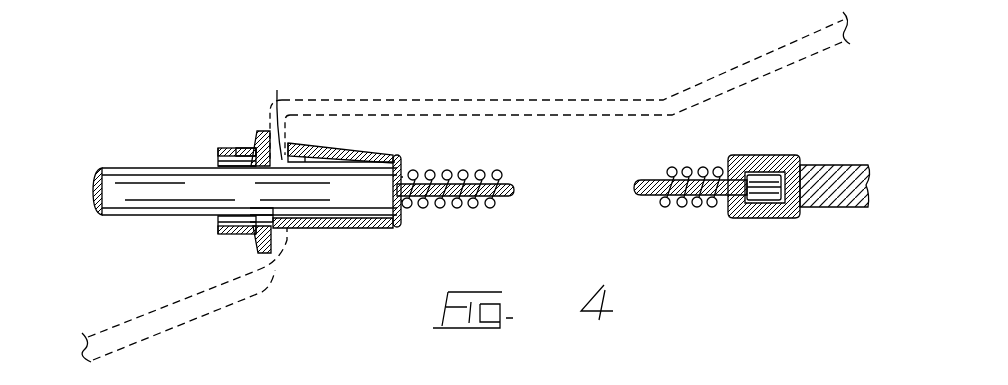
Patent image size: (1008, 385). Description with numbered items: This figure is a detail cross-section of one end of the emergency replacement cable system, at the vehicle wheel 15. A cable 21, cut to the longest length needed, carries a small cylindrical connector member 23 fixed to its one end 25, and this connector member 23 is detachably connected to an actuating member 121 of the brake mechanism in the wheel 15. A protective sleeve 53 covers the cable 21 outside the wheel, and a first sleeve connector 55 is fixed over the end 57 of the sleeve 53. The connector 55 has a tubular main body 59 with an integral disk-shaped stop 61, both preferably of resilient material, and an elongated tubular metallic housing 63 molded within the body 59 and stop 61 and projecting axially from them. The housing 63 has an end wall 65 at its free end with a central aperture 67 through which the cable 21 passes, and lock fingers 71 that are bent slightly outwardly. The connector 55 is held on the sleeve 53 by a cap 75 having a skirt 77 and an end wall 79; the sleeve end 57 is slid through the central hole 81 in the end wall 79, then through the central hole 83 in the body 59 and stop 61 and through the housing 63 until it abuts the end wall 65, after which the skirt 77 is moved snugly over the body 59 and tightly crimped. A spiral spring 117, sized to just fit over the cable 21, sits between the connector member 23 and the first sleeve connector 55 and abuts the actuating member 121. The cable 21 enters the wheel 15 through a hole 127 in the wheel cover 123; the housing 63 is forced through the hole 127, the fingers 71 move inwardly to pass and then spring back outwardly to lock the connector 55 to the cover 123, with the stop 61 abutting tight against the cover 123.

The vehicle wheel 15 is at (138, 320).
The cable 21 is at (653, 199).
The cylindrical connector member 23 is at (768, 206).
The one end of the cable 25 is at (792, 190).
The protective sleeve 53 is at (164, 219).
The first sleeve connector 55 is at (382, 178).
The end of sleeve 57 is at (395, 229).
The tubular main body 59 is at (238, 148).
The disk-shaped stop 61 is at (266, 256).
The tubular metallic housing 63 is at (323, 232).
The end wall 65 is at (398, 222).
The central aperture 67 is at (399, 163).
The lock finger 71 is at (308, 147).
The cap 75 is at (206, 157).
The skirt 77 is at (238, 234).
The end wall 79 is at (219, 220).
The central hole 81 is at (217, 167).
The central hole 83 is at (256, 214).
The spiral spring 117 is at (681, 167).
The actuating member 121 is at (783, 219).
The wheel cover 123 is at (356, 88).
The hole 127 is at (266, 113).